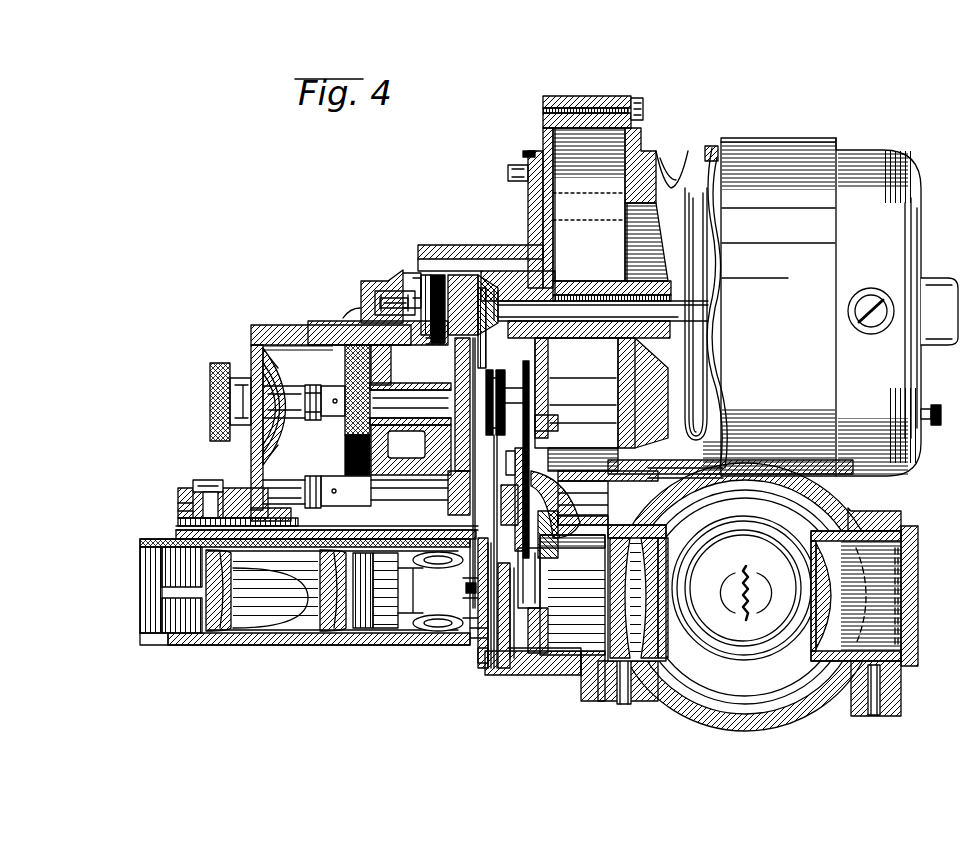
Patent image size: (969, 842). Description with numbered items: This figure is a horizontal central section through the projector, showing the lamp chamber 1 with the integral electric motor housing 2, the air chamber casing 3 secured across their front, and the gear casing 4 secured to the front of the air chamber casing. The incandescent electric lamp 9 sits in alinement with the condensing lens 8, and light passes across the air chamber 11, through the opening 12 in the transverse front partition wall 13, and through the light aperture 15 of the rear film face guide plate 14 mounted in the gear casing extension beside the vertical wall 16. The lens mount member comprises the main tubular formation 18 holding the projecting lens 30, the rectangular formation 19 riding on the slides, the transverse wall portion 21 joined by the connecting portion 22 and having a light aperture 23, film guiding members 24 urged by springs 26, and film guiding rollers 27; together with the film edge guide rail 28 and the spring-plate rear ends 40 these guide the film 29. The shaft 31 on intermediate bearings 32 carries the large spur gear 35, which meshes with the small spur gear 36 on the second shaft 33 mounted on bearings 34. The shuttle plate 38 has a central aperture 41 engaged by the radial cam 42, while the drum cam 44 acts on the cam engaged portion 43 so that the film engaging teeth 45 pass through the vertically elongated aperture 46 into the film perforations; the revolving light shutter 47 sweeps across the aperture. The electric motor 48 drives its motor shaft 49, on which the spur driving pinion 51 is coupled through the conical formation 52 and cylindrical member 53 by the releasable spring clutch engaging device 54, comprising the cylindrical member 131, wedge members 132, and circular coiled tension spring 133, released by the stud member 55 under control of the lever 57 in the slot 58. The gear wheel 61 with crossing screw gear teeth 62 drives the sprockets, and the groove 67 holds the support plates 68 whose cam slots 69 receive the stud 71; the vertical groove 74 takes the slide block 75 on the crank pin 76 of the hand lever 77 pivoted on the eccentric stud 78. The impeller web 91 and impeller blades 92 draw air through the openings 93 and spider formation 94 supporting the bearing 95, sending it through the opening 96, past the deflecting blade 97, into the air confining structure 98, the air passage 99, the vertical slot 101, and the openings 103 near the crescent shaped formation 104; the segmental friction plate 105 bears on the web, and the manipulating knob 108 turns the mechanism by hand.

The lamp chamber 1 is at (840, 512).
The electric motor housing 2 is at (905, 215).
The air chamber casing 3 is at (570, 170).
The gear casing 4 is at (286, 318).
The condensing lens 8 is at (620, 668).
The incandescent electric lamp 9 is at (745, 610).
The air chamber 11 is at (640, 135).
The opening 12 is at (548, 650).
The transverse front partition wall 13 is at (530, 668).
The rear film face guide plate 14 is at (473, 645).
The light aperture 15 is at (486, 660).
The vertical wall 16 is at (210, 498).
The main tubular formation 18 is at (205, 638).
The rectangular formation 19 is at (180, 528).
The transverse wall portion 21 is at (468, 630).
The connecting portion 22 is at (400, 638).
The light aperture 23 is at (458, 587).
The film guiding members 24 is at (428, 608).
The springs 26 is at (370, 638).
The film guiding rollers 27 is at (430, 650).
The film edge guide rail 28 is at (478, 655).
The film 29 is at (462, 640).
The projecting lens 30 is at (195, 600).
The shaft 31 is at (348, 318).
The intermediate bearings 32 is at (340, 318).
The second shaft 33 is at (340, 480).
The bearings 34 is at (330, 470).
The large spur gear 35 is at (390, 290).
The small spur gear 36 is at (345, 455).
The shuttle plate 38 is at (523, 417).
The rear ends of spring plates 40 is at (430, 558).
The central aperture 41 is at (545, 432).
The radial cam 42 is at (525, 465).
The cam engaged portion 43 is at (522, 405).
The drum cam 44 is at (525, 390).
The film engaging teeth 45 is at (522, 552).
The vertically elongated aperture 46 is at (500, 580).
The revolving light shutter 47 is at (522, 385).
The electric motor 48 is at (704, 138).
The motor shaft 49 is at (512, 245).
The spur driving pinion 51 is at (438, 268).
The conical formation 52 is at (458, 266).
The cylindrical member 53 is at (475, 270).
The releasable spring clutch engaging device 54 is at (412, 268).
The stud member 55 is at (372, 285).
The lever 57 is at (355, 275).
The slot 58 is at (330, 312).
The gear wheel 61 is at (300, 312).
The crossing screw gear teeth 62 is at (290, 318).
The groove 67 is at (245, 488).
The support plates 68 is at (232, 638).
The cam slots 69 is at (302, 638).
The stud 71 is at (317, 638).
The vertical groove 74 is at (228, 638).
The slide block 75 is at (175, 512).
The crank pin 76 is at (175, 500).
The hand lever 77 is at (180, 520).
The eccentric stud 78 is at (190, 485).
The web 91 is at (518, 180).
The impeller blades 92 is at (600, 100).
The openings 93 is at (703, 140).
The spider formation 94 is at (655, 200).
The bearing 95 is at (576, 284).
The opening 96 is at (715, 450).
The deflecting blade 97 is at (598, 492).
The air confining structure 98 is at (515, 610).
The air passage 99 is at (494, 662).
The vertical slot 101 is at (505, 665).
The openings 103 is at (628, 690).
The crescent shaped formation 104 is at (580, 672).
The segmental friction plate 105 is at (508, 157).
The manipulating knob 108 is at (202, 402).
The cylindrical member 131 is at (404, 272).
The wedge members 132 is at (420, 266).
The circular coiled tension spring 133 is at (425, 260).